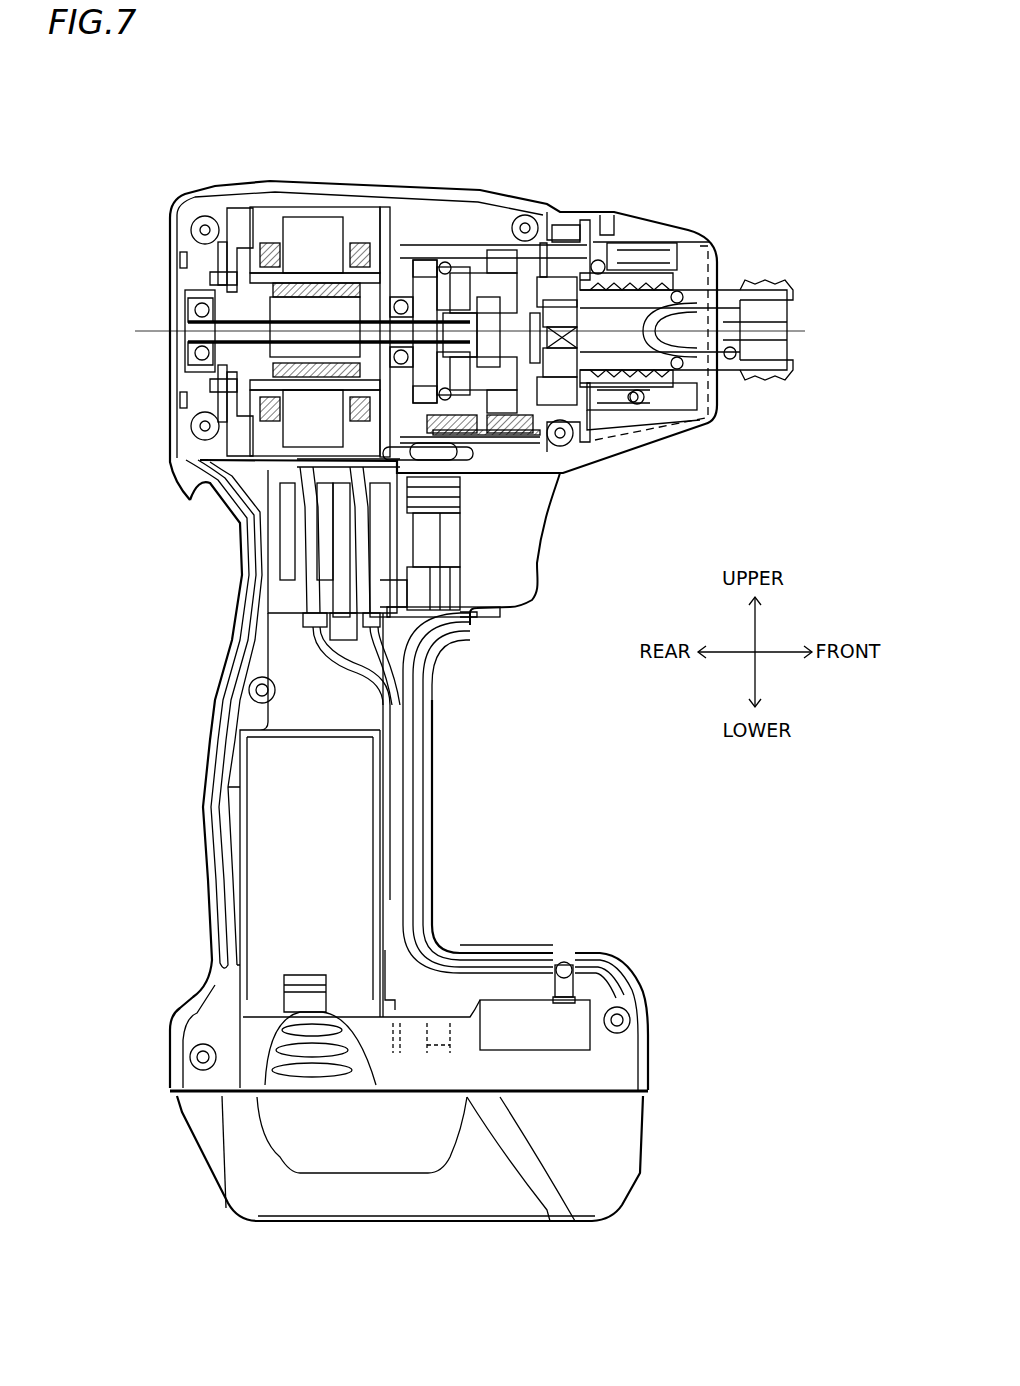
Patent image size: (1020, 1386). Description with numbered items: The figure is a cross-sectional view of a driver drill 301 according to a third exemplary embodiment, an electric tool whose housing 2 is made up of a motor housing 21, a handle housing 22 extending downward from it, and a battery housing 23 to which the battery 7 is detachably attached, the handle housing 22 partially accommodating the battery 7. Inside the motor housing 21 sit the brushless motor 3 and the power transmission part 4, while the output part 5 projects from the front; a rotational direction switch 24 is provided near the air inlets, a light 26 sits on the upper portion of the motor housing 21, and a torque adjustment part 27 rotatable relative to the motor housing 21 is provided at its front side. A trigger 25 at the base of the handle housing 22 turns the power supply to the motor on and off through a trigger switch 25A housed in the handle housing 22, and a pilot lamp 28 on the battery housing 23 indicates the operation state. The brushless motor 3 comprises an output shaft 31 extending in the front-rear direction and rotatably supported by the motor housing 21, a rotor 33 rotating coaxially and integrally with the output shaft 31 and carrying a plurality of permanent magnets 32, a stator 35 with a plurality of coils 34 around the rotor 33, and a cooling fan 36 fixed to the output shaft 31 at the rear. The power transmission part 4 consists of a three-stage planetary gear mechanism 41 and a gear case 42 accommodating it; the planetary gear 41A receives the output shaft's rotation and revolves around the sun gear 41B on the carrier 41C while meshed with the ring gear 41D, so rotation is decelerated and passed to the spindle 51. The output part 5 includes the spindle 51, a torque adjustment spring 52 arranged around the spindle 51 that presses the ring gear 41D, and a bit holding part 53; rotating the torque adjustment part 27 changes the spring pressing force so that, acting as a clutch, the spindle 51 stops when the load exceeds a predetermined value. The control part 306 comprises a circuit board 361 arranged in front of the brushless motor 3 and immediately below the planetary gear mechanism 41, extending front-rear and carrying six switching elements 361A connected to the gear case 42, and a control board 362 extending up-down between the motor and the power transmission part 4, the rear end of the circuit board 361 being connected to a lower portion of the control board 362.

The housing 2 is at (327, 273).
The brushless motor 3 is at (331, 255).
The power transmission part 4 is at (541, 278).
The output part 5 is at (652, 250).
The battery 7 is at (590, 1133).
The motor housing 21 is at (560, 240).
The handle housing 22 is at (432, 740).
The battery housing 23 is at (467, 953).
The rotational direction switch 24 is at (445, 455).
The trigger 25 is at (513, 573).
The trigger switch 25A is at (340, 560).
The light 26 is at (580, 232).
The torque adjustment part 27 is at (677, 423).
The pilot lamp 28 is at (553, 962).
The output shaft 31 is at (181, 262).
The permanent magnets 32 is at (280, 293).
The rotor 33 is at (313, 307).
The coils 34 is at (268, 237).
The stator 35 is at (323, 233).
The cooling fan 36 is at (233, 265).
The planetary gear mechanism 41 is at (487, 242).
The planetary gear 41A is at (458, 265).
The sun gear 41B is at (487, 268).
The carrier 41C is at (530, 300).
The ring gear 41D is at (423, 263).
The gear case 42 is at (570, 442).
The spindle 51 is at (743, 337).
The torque adjustment spring 52 is at (633, 402).
The bit holding part 53 is at (777, 282).
The driver drill 301 is at (697, 180).
The control part 306 is at (383, 447).
The circuit board 361 is at (473, 452).
The switching elements 361A is at (395, 440).
The control board 362 is at (390, 250).